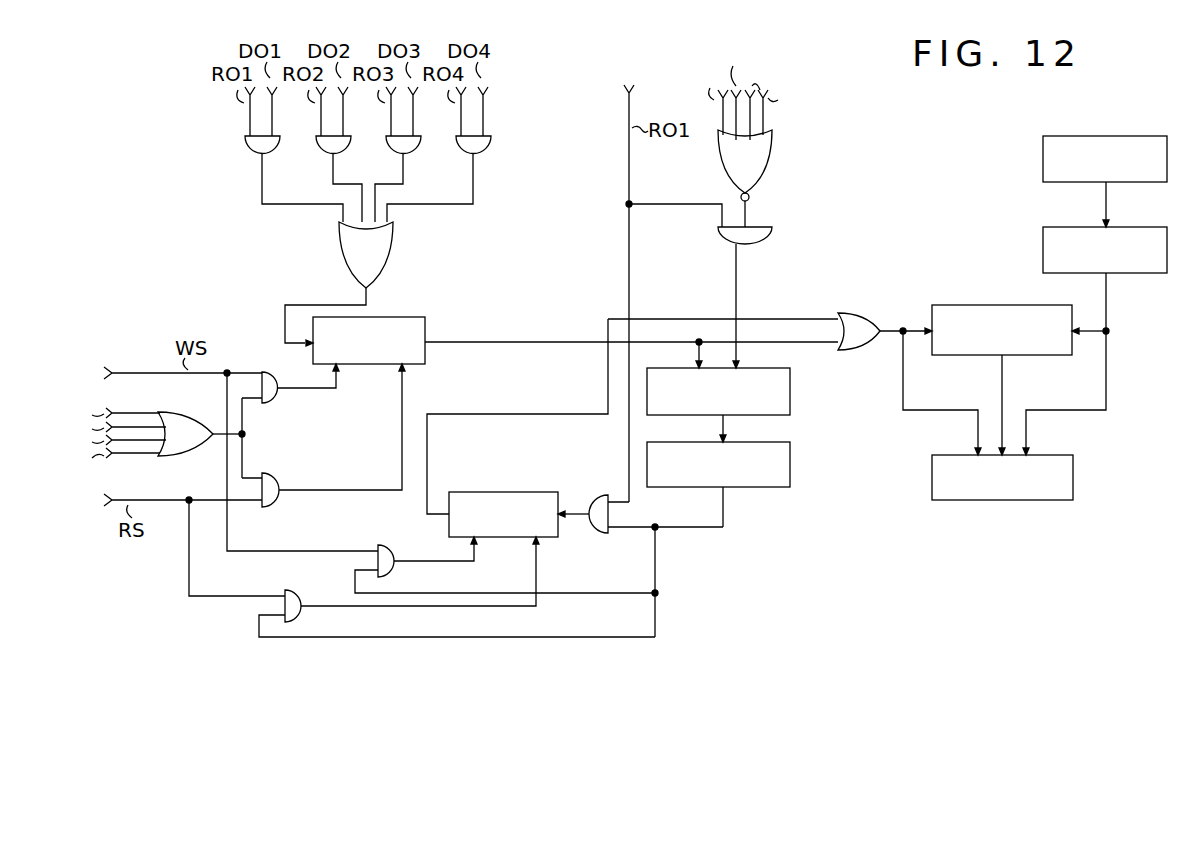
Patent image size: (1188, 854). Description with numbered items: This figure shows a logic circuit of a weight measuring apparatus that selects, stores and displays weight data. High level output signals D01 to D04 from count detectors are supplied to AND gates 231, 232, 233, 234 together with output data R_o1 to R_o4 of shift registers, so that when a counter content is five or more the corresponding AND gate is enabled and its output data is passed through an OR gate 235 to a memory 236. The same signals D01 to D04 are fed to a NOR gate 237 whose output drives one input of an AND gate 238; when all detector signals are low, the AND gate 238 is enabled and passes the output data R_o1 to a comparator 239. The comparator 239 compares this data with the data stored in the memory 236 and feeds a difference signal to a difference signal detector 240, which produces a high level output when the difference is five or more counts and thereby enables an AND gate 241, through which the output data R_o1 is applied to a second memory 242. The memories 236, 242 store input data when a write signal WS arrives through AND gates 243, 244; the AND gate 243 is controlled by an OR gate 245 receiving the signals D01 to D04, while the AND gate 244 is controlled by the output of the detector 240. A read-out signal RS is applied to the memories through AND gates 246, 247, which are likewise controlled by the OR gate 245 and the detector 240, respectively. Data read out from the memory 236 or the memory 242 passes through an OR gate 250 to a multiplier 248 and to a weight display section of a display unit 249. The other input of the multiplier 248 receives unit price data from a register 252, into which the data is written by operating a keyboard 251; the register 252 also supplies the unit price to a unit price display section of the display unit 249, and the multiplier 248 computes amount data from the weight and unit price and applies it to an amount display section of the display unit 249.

The AND gate 231 is at (252, 154).
The AND gate 232 is at (323, 154).
The AND gate 233 is at (393, 154).
The AND gate 234 is at (463, 154).
The OR gate 235 is at (380, 260).
The memory 236 is at (408, 328).
The NOR gate 237 is at (762, 158).
The AND gate 238 is at (744, 236).
The comparator 239 is at (786, 405).
The difference signal detector 240 is at (786, 479).
The AND gate 241 is at (592, 520).
The memory 242 is at (529, 498).
The AND gate 243 is at (275, 390).
The AND gate 244 is at (386, 556).
The OR gate 245 is at (180, 422).
The AND gate 246 is at (274, 494).
The AND gate 247 is at (304, 605).
The multiplier 248 is at (939, 314).
The display unit 249 is at (960, 500).
The OR gate 250 is at (857, 322).
The keyboard 251 is at (1046, 176).
The register 252 is at (1046, 266).